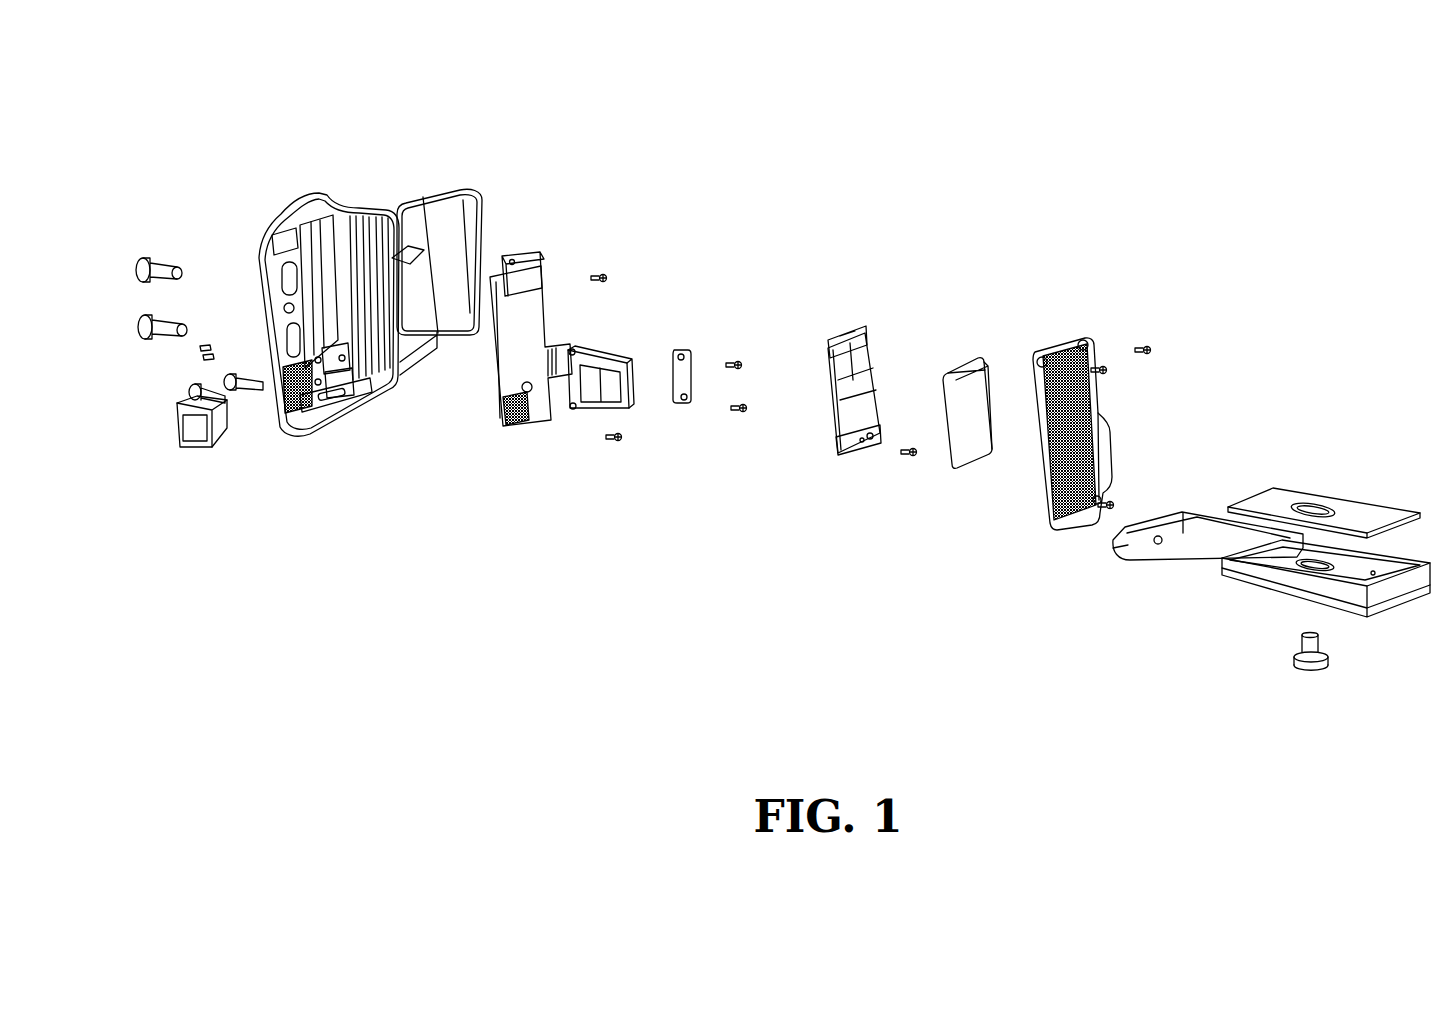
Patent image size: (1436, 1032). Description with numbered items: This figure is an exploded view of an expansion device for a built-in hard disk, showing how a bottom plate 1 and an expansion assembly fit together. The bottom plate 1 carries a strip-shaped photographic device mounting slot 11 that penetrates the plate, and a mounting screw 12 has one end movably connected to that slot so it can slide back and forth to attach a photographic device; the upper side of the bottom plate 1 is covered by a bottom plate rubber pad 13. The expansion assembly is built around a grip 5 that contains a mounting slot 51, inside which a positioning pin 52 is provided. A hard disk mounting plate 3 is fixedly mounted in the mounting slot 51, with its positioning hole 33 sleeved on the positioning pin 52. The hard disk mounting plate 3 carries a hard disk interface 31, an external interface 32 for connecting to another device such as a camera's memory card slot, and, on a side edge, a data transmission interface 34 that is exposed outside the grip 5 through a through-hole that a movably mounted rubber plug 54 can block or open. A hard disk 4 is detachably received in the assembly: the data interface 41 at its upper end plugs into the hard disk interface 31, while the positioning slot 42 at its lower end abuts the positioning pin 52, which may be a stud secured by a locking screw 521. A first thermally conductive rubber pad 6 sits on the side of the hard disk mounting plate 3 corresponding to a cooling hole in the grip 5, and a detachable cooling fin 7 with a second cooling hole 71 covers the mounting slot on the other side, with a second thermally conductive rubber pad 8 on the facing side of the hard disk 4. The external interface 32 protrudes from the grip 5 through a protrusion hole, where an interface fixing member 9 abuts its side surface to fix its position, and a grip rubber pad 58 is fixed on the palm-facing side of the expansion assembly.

The bottom plate 1 is at (1260, 577).
The photographic device mounting slot 11 is at (1313, 570).
The mounting screw 12 is at (1313, 670).
The bottom plate rubber pad 13 is at (1352, 510).
The hard disk mounting plate 3 is at (542, 300).
The hard disk interface 31 is at (523, 277).
The external interface 32 is at (617, 377).
The positioning hole 33 is at (527, 392).
The data transmission interface 34 is at (503, 430).
The hard disk 4 is at (870, 393).
The data interface 41 is at (843, 342).
The positioning slot 42 is at (862, 445).
The grip 5 is at (267, 223).
The mounting slot 51 is at (317, 247).
The positioning pin 52 is at (317, 437).
The locking screw 521 is at (911, 456).
The rubber plug 54 is at (205, 433).
The grip rubber pad 58 is at (403, 210).
The first thermally conductive rubber pad 6 is at (432, 350).
The cooling fin 7 is at (1052, 348).
The second cooling hole 71 is at (1077, 345).
The second thermally conductive rubber pad 8 is at (960, 443).
The interface fixing member 9 is at (683, 353).